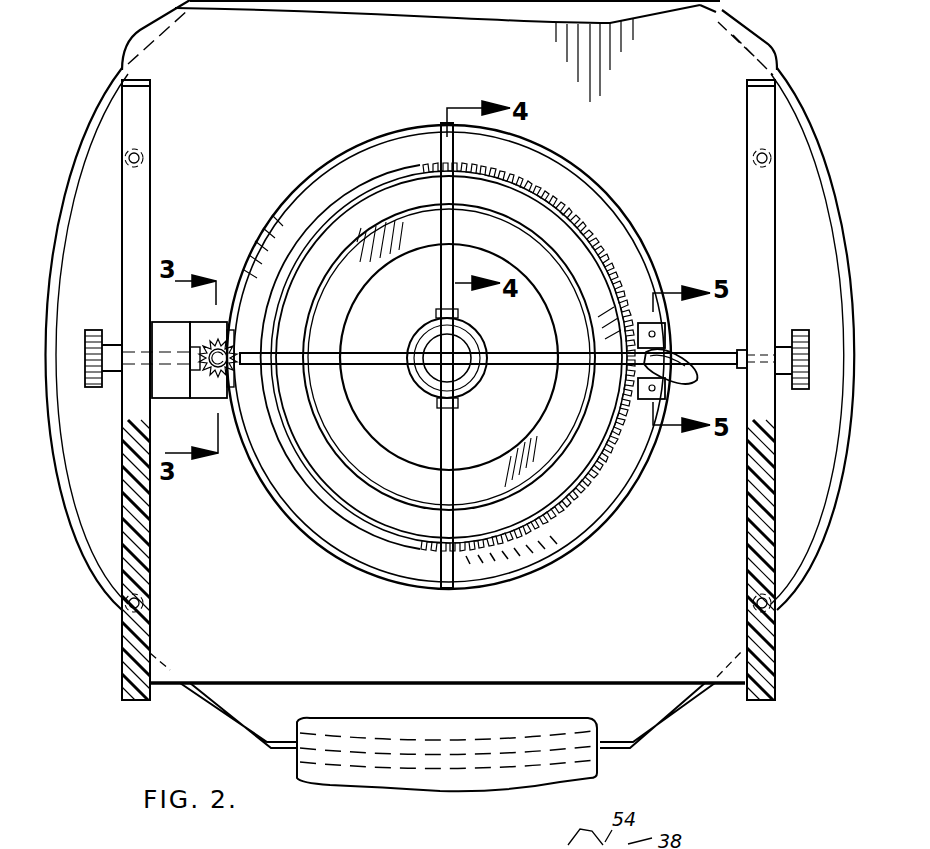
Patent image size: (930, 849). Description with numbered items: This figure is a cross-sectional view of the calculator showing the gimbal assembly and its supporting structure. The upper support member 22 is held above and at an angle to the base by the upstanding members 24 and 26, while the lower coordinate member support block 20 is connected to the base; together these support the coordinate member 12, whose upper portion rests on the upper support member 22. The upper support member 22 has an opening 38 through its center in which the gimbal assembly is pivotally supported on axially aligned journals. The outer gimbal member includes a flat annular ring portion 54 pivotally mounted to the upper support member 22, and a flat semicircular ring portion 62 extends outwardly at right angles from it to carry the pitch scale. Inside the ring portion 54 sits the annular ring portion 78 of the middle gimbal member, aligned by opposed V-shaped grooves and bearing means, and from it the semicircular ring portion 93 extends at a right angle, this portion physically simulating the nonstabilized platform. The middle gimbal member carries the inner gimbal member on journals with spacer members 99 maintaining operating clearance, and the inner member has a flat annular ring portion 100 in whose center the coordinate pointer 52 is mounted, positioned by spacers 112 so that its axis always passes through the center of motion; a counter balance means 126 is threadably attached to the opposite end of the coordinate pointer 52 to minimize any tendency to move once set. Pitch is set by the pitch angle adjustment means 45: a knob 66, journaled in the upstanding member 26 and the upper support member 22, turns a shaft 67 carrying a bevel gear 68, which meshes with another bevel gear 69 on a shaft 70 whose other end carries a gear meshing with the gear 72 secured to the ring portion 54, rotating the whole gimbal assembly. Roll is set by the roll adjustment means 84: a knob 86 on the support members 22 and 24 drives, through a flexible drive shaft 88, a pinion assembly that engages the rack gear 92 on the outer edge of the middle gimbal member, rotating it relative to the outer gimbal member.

The coordinate member 12 is at (88, 145).
The lower coordinate member support block 20 is at (445, 790).
The upper support member 22 is at (326, 60).
The upstanding member 24 is at (768, 236).
The upstanding member 26 is at (150, 538).
The opening 38 is at (588, 545).
The pitch angle adjustment means 45 is at (213, 367).
The coordinate pointer 52 is at (482, 384).
The annular ring portion 54 is at (322, 533).
The semicircular ring portion 62 is at (446, 588).
The knob 66 is at (94, 388).
The shaft 67 is at (157, 352).
The bevel gear 68 is at (203, 375).
The bevel gear 69 is at (237, 370).
The shaft 70 is at (233, 350).
The gear 72 is at (234, 335).
The annular ring portion 78 is at (370, 560).
The roll adjustment means 84 is at (687, 384).
The knob 86 is at (798, 330).
The flexible drive shaft 88 is at (704, 352).
The rack gear 92 is at (596, 205).
The semicircular ring portion 93 is at (530, 339).
The spacer members 99 is at (430, 205).
The annular ring portion 100 is at (537, 427).
The spacers 112 is at (343, 349).
The counter balance means 126 is at (431, 380).